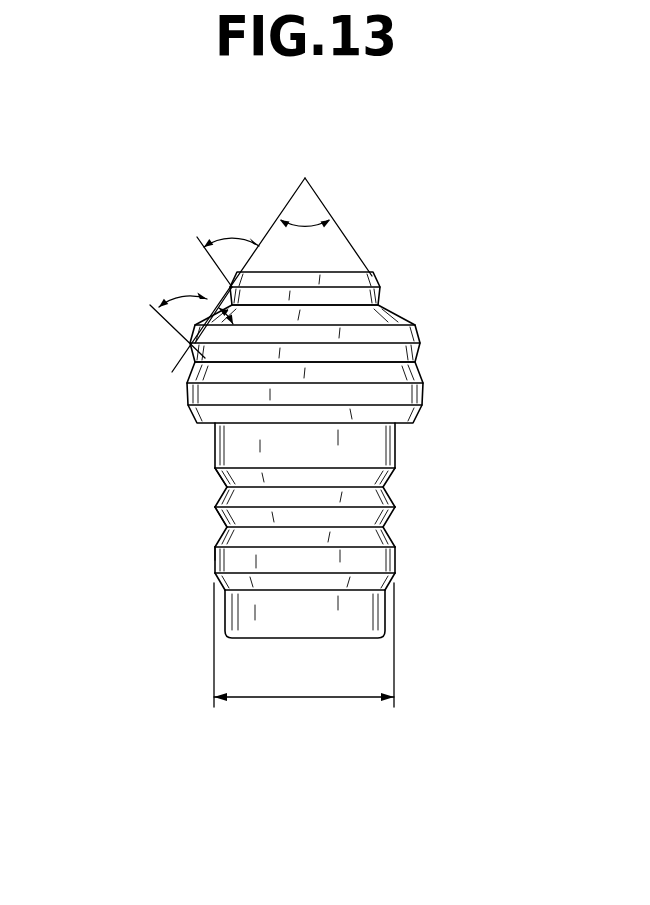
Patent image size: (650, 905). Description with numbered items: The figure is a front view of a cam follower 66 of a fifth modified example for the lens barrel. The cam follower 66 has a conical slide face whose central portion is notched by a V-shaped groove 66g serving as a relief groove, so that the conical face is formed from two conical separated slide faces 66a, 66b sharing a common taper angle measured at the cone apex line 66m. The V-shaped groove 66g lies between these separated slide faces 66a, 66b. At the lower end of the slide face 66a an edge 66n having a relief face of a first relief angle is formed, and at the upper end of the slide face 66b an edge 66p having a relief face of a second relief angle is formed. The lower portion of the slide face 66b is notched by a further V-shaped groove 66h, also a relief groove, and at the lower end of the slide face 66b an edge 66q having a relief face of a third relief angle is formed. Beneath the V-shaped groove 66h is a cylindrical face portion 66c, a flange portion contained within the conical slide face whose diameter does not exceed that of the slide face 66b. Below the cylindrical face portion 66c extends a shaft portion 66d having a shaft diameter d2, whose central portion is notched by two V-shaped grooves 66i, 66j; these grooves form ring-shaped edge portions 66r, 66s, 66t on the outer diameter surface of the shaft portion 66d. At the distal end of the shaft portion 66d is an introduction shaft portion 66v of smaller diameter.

The cam follower 66 is at (331, 270).
The separated slide face 66a is at (376, 278).
The separated slide face 66b is at (417, 341).
The cylindrical face portion (flange portion) 66c is at (423, 396).
The shaft portion 66d is at (397, 448).
The V-shaped groove 66g is at (373, 303).
The V-shaped groove 66h is at (413, 362).
The V-shaped groove 66i is at (394, 488).
The V-shaped groove 66j is at (391, 528).
The conical envelope line 66m is at (262, 255).
The edge 66n is at (229, 287).
The edge 66p is at (224, 298).
The edge 66q is at (214, 332).
The edge portion 66r is at (215, 470).
The edge portion 66s is at (215, 509).
The edge portion 66t is at (215, 548).
The introduction shaft portion 66v is at (386, 613).
The shaft diameter d2 is at (304, 645).